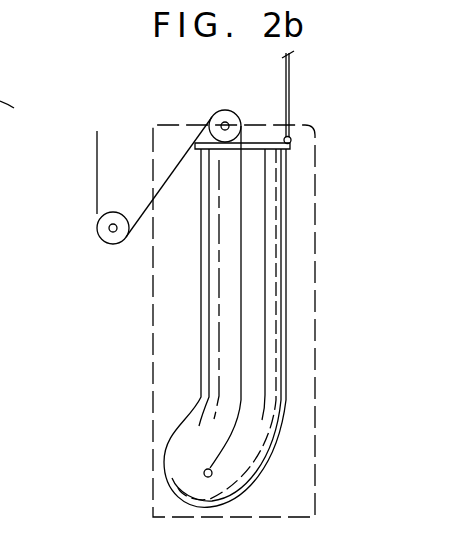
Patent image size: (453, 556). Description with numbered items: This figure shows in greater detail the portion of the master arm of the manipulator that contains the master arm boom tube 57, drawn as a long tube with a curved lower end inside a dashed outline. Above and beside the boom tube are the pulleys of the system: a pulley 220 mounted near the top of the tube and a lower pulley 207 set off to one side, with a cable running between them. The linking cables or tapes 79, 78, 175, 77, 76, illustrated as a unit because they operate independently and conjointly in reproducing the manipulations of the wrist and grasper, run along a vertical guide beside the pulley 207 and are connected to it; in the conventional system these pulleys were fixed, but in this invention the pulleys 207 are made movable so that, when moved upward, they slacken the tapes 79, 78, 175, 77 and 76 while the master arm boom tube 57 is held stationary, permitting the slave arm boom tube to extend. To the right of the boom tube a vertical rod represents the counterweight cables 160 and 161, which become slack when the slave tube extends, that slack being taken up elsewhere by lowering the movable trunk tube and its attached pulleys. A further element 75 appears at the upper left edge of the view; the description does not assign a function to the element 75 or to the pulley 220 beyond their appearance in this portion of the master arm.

The master arm boom tube 57 is at (316, 228).
The upper pulley 220 is at (214, 113).
The pulleys 207 is at (110, 244).
The linking cable or tape 76 is at (54, 178).
The linking cable or tape 77 is at (54, 178).
The linking cable or tape 78 is at (54, 178).
The linking cable or tape 79 is at (54, 178).
The linking cable or tape 175 is at (39, 225).
The support 75 is at (7, 115).
The counterweight cable 160 is at (313, 97).
The counterweight cable 161 is at (290, 88).